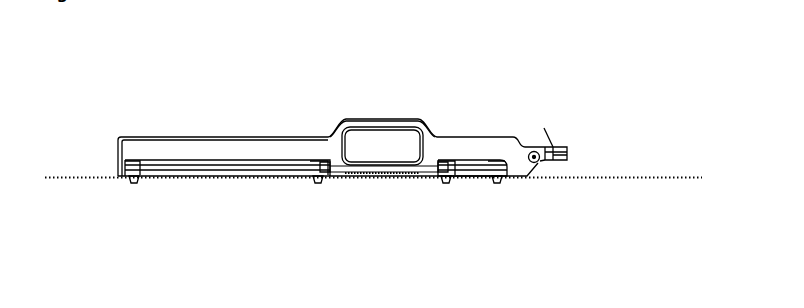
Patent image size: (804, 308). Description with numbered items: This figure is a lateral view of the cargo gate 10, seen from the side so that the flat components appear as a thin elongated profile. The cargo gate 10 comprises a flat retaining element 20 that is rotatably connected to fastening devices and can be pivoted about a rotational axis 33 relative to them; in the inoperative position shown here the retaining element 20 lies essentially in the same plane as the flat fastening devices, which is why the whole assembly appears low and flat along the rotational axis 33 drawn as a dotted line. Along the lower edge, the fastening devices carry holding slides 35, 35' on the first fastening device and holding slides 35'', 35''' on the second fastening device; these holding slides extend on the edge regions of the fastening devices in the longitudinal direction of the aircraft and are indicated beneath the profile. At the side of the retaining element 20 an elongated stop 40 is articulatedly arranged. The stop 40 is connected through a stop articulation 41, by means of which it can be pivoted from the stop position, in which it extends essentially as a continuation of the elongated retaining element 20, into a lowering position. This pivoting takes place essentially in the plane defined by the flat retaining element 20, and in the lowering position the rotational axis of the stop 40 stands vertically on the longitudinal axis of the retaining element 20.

The cargo gate 10 is at (372, 119).
The retaining element 20 is at (433, 125).
The rotational axis 33 is at (632, 178).
The holding slide 35 is at (143, 225).
The holding slide 35' is at (325, 225).
The holding slide 35'' is at (457, 225).
The holding slide 35''' is at (508, 225).
The stop 40 is at (553, 147).
The stop articulation 41 is at (535, 163).